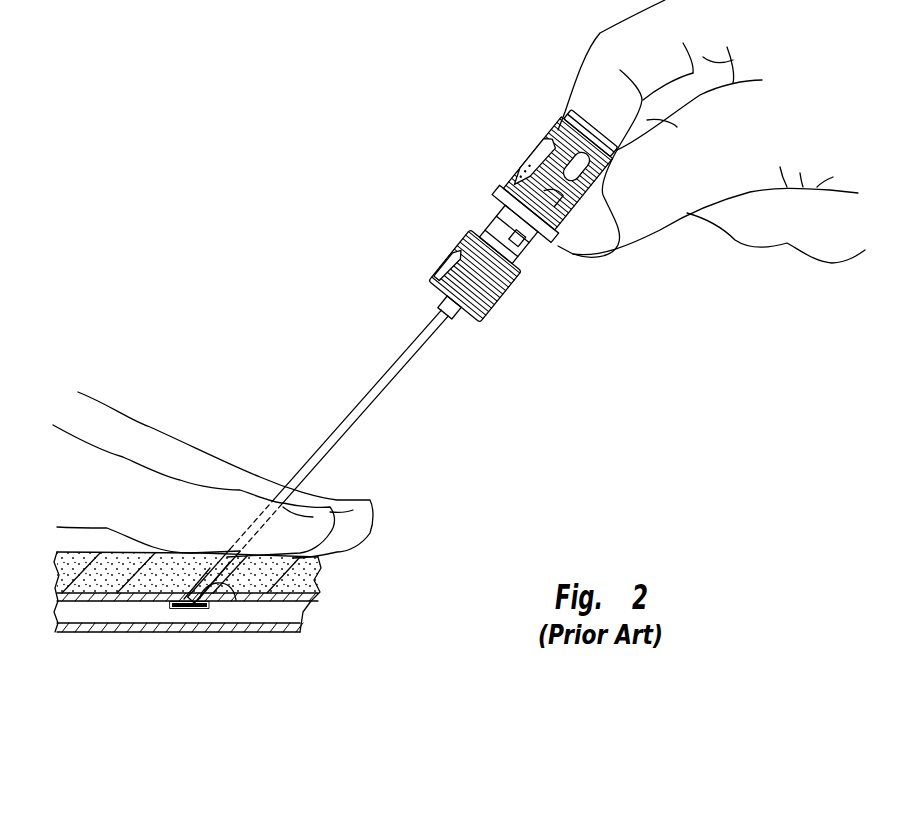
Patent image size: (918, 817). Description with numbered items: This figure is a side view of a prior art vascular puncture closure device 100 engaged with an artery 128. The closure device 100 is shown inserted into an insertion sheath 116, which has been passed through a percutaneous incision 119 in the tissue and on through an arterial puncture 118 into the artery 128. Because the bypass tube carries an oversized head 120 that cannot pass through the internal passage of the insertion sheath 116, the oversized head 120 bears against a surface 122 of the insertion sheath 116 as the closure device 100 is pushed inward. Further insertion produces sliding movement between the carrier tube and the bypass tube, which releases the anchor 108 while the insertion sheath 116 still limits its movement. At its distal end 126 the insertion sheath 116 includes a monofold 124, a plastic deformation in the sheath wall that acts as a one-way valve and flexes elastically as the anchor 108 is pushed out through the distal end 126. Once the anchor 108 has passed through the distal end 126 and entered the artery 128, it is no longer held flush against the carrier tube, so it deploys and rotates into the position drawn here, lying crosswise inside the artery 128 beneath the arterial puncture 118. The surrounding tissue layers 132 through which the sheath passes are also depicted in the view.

The vascular puncture closure device 100 is at (500, 197).
The anchor 108 is at (183, 608).
The insertion sheath 116 is at (403, 363).
The arterial puncture 118 is at (183, 598).
The percutaneous incision 119 is at (203, 597).
The oversized head 120 is at (508, 243).
The surface of insertion sheath 122 is at (522, 273).
The monofold 124 is at (207, 607).
The distal end of insertion sheath 126 is at (236, 600).
The artery 128 is at (310, 600).
The subcutaneous tissue 132 is at (293, 568).